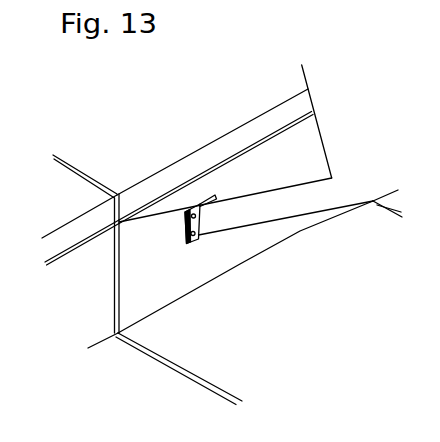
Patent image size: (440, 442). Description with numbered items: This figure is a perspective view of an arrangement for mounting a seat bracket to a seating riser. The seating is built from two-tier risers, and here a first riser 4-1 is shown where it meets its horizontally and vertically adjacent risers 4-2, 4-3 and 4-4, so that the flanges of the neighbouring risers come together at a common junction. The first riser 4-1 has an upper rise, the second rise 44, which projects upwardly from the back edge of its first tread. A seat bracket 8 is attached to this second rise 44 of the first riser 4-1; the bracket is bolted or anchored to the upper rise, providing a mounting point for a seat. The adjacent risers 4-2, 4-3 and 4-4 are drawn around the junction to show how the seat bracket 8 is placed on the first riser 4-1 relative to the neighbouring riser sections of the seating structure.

The first riser 4-1 is at (190, 349).
The riser 4-2 is at (137, 166).
The riser 4-3 is at (58, 217).
The riser 4-4 is at (82, 320).
The seat bracket 8 is at (303, 205).
The second rise 44 is at (230, 262).